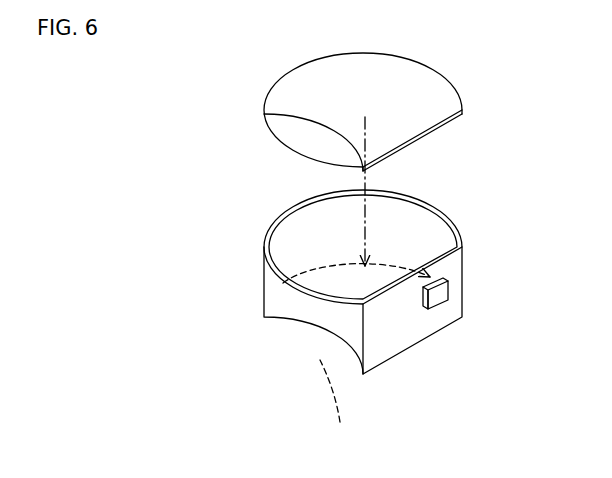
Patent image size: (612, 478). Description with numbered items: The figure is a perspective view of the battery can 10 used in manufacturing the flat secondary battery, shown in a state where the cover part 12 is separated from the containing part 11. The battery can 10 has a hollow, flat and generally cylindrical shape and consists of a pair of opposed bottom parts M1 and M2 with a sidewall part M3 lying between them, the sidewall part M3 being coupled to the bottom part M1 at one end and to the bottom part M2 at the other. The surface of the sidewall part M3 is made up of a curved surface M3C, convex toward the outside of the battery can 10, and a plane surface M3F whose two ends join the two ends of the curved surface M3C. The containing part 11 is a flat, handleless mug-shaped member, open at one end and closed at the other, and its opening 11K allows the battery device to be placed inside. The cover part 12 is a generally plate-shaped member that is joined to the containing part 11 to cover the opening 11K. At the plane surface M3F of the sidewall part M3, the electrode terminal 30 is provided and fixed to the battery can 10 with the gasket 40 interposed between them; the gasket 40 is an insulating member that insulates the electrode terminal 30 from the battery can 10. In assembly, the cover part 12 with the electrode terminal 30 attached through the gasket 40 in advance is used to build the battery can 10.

The cover part 12 is at (280, 104).
The bottom part M1 is at (440, 100).
The opening 11K is at (448, 213).
The gasket 40 is at (452, 278).
The electrode terminal 30 is at (448, 300).
The battery can 10 is at (349, 320).
The containing part 11 is at (282, 297).
The curved surface M3C is at (278, 334).
The sidewall part M3 is at (444, 324).
The plane surface M3F is at (405, 338).
The bottom part M2 is at (333, 408).